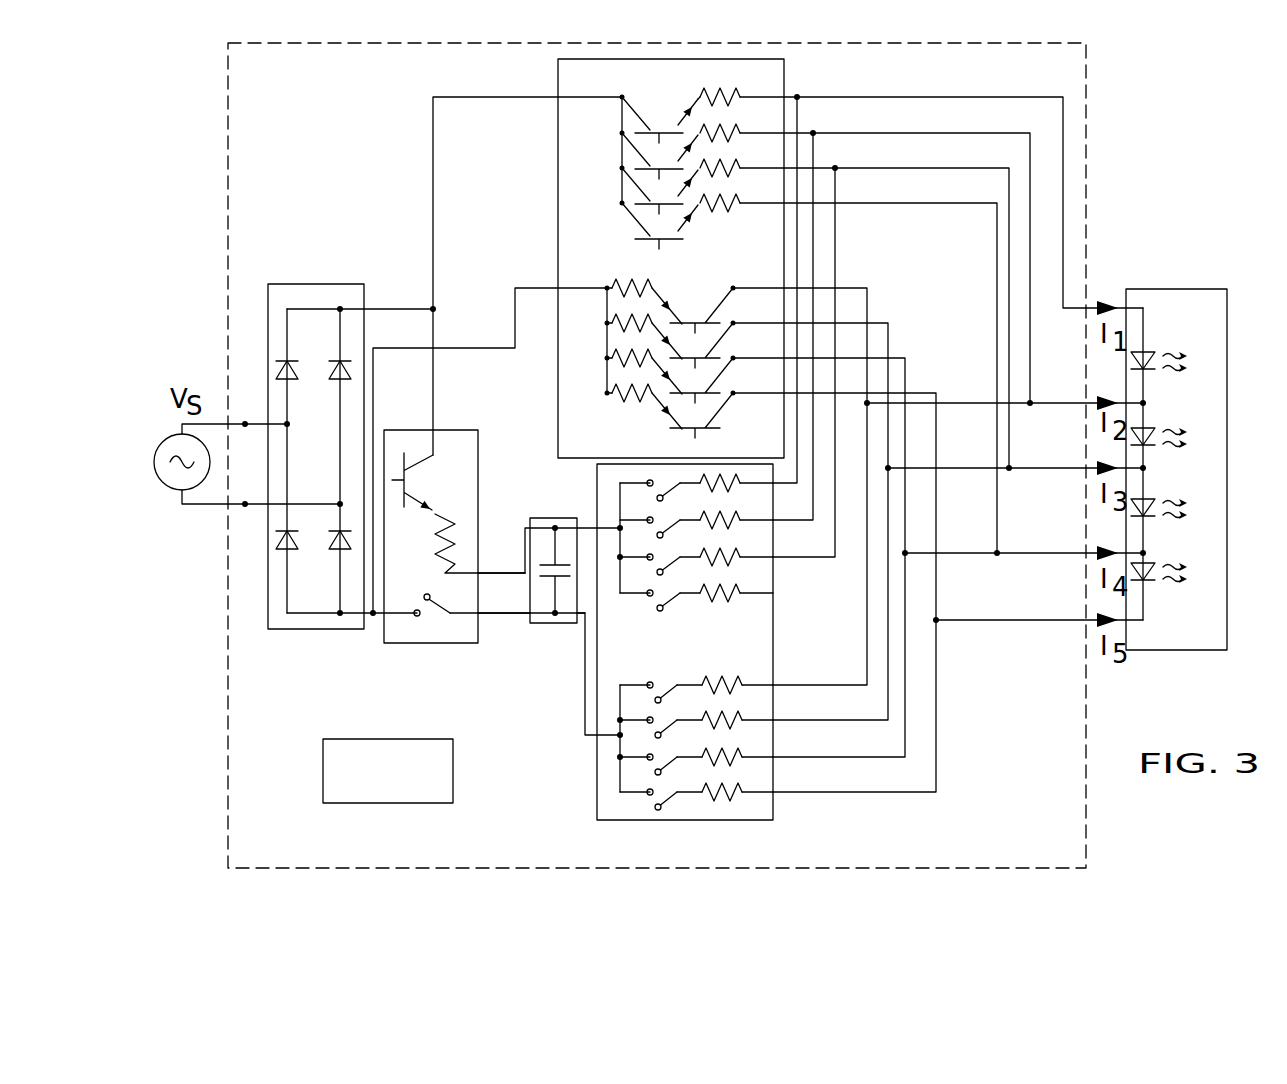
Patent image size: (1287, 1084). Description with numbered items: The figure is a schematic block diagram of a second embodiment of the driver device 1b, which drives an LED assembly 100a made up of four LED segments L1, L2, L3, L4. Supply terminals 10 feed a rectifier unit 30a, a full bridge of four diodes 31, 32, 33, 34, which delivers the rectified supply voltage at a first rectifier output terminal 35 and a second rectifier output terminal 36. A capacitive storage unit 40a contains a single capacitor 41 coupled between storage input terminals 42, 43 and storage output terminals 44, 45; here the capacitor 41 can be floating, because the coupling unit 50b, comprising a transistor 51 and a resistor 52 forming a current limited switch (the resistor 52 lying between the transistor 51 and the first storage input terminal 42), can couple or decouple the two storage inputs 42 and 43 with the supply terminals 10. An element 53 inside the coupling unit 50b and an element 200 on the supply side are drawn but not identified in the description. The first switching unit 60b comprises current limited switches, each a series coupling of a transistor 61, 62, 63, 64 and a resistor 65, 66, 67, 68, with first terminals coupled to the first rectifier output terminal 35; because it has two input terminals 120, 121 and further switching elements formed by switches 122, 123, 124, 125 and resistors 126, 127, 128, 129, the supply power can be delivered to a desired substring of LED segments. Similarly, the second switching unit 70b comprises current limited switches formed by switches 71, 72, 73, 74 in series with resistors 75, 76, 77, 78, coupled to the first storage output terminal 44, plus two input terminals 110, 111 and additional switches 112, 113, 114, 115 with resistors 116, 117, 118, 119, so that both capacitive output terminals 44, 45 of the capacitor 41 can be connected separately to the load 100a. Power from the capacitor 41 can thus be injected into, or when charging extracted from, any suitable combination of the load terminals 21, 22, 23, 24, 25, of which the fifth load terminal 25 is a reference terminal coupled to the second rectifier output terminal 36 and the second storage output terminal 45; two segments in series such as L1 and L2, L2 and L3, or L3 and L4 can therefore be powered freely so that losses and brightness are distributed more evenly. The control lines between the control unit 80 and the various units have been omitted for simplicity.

The driver device 1b is at (1088, 70).
The supply terminals 10 is at (245, 430).
The load terminal 21 is at (1094, 304).
The load terminal 22 is at (1092, 402).
The load terminal 23 is at (1094, 466).
The load terminal 24 is at (1094, 551).
The fifth load terminal 25 is at (1094, 618).
The rectifier unit 30a is at (323, 456).
The diode 31 is at (287, 361).
The diode 32 is at (332, 378).
The diode 33 is at (292, 533).
The diode 34 is at (334, 550).
The first rectifier output terminal 35 is at (340, 308).
The second rectifier output terminal 36 is at (334, 628).
The capacitive storage unit 40a is at (552, 518).
The capacitor 41 is at (529, 574).
The first storage input terminal 42 is at (524, 528).
The storage input terminal 43 is at (514, 618).
The first storage output terminal 44 is at (586, 530).
The second storage output terminal 45 is at (586, 630).
The coupling unit 50b is at (454, 514).
The transistor 51 is at (414, 468).
The resistor 52 is at (434, 552).
The switch 53 is at (431, 602).
The first switching unit 60b is at (715, 257).
The transistor 61 is at (626, 112).
The transistor 62 is at (626, 148).
The transistor 63 is at (626, 183).
The transistor 64 is at (626, 220).
The resistor 65 is at (725, 96).
The resistor 66 is at (725, 132).
The resistor 67 is at (725, 167).
The resistor 68 is at (725, 202).
The second switching unit 70b is at (681, 640).
The switch 71 is at (664, 489).
The switch 72 is at (664, 526).
The switch 73 is at (664, 563).
The switch 74 is at (664, 599).
The resistor 75 is at (734, 466).
The resistor 76 is at (730, 518).
The resistor 77 is at (730, 555).
The resistor 78 is at (730, 591).
The control unit 80 is at (382, 739).
The LED assembly 100a is at (1191, 444).
The input terminal 110 is at (619, 536).
The input terminal 111 is at (617, 733).
The switch 112 is at (660, 696).
The switch 113 is at (618, 736).
The switch 114 is at (618, 760).
The switch 115 is at (673, 798).
The resistor 116 is at (718, 686).
The resistor 117 is at (760, 722).
The resistor 118 is at (760, 758).
The resistor 119 is at (760, 793).
The input terminal 120 is at (588, 97).
The input terminal 121 is at (540, 288).
The switch 122 is at (725, 316).
The switch 123 is at (725, 351).
The switch 124 is at (725, 386).
The switch 125 is at (725, 421).
The resistor 126 is at (614, 284).
The resistor 127 is at (614, 319).
The resistor 128 is at (614, 354).
The resistor 129 is at (614, 389).
The AC voltage source 200 is at (157, 478).
The LED segment L1 is at (1153, 354).
The LED segment L2 is at (1153, 431).
The LED segment L3 is at (1153, 501).
The LED segment L4 is at (1153, 564).